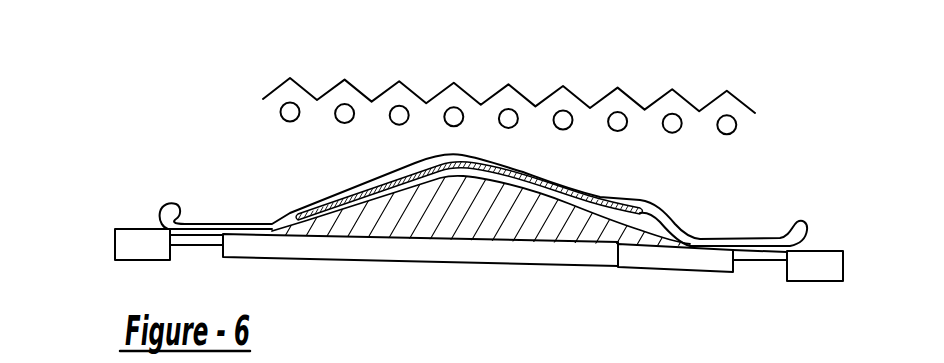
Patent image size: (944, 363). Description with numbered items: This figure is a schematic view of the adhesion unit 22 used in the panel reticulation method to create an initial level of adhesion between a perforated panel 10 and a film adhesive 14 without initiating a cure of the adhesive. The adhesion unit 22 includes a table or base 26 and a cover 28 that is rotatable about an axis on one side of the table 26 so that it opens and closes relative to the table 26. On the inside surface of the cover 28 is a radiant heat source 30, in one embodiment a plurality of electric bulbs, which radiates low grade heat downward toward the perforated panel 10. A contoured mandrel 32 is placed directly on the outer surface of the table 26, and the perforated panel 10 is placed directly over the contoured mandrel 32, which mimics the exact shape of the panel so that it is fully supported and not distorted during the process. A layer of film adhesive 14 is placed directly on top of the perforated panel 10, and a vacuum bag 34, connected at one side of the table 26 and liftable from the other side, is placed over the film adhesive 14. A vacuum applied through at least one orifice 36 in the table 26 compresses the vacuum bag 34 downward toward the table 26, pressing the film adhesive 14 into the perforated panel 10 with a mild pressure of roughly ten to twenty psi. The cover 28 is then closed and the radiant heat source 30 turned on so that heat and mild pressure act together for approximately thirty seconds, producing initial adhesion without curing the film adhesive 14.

The perforated panel 10 is at (479, 247).
The film adhesive 14 is at (543, 192).
The adhesion unit 22 is at (430, 101).
The table 26 is at (495, 248).
The cover 28 is at (700, 90).
The radiant heat source 30 is at (731, 129).
The contoured mandrel 32 is at (595, 227).
The vacuum bag 34 is at (660, 222).
The orifice 36 is at (200, 252).